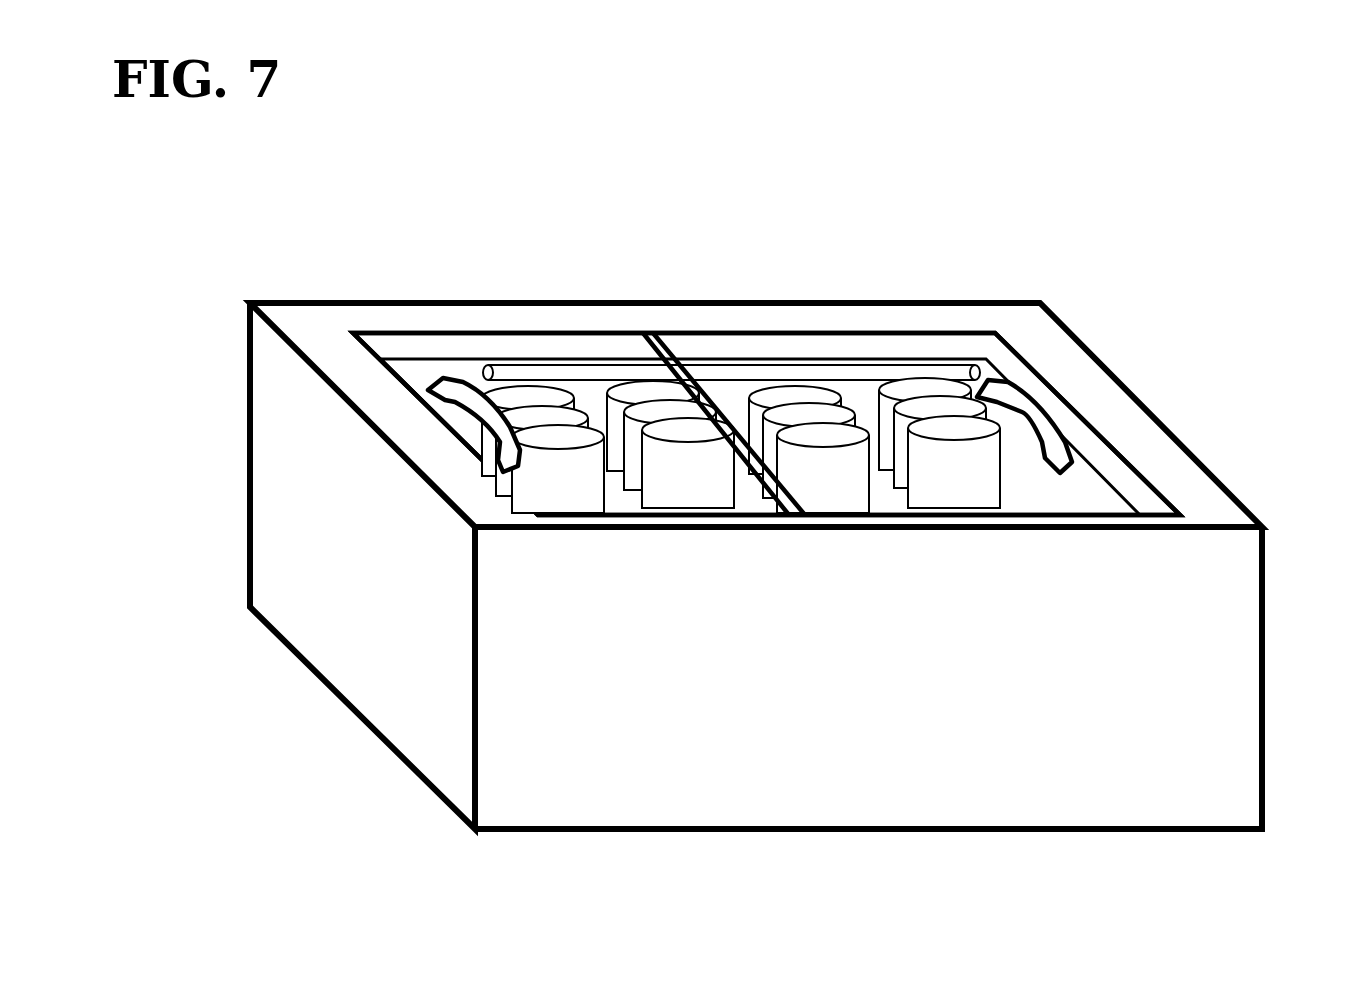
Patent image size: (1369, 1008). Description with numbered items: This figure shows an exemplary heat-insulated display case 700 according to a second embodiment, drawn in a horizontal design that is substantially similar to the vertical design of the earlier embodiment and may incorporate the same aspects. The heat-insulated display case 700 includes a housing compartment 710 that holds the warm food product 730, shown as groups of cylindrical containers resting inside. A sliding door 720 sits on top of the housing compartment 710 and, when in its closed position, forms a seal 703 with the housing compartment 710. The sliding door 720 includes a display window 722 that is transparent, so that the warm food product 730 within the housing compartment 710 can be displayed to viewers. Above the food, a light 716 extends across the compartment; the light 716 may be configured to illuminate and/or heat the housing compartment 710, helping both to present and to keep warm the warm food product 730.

The heat-insulated display case 700 is at (1232, 187).
The housing compartment 710 is at (373, 650).
The sliding door 720 is at (826, 339).
The seal 703 is at (1018, 350).
The display window 722 is at (1083, 490).
The light 716 is at (888, 370).
The warm food product 730 is at (741, 338).